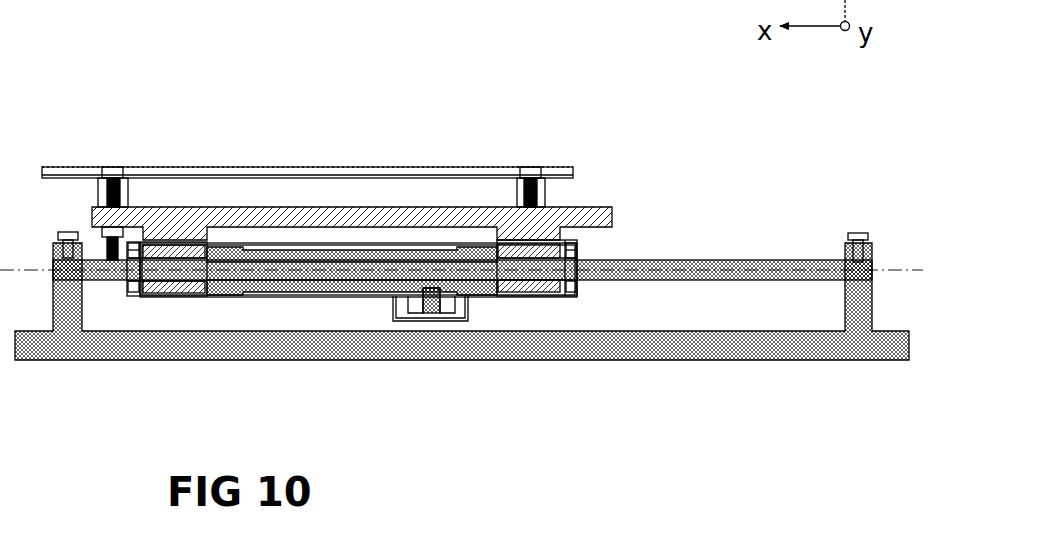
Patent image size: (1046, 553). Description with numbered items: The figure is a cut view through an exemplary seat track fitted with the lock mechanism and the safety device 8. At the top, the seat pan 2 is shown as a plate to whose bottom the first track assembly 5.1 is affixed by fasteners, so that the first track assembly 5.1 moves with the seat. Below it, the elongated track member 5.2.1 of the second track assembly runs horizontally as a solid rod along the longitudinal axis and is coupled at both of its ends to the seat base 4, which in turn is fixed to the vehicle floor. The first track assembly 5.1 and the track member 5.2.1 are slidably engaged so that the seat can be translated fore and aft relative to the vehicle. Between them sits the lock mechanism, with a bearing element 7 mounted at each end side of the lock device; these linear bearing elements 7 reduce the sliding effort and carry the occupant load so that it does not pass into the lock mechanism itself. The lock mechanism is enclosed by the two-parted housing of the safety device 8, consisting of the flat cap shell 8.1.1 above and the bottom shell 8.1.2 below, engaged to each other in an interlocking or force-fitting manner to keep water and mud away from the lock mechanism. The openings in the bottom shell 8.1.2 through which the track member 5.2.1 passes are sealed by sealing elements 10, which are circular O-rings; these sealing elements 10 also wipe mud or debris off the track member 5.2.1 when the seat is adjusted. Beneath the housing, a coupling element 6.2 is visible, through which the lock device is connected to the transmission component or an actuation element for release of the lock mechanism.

The seat pan 2 is at (413, 167).
The seat base 4 is at (728, 346).
The first track assembly 5.1 is at (513, 222).
The track member 5.2.1 is at (753, 264).
The coupling element 6.2 is at (446, 308).
The bearing element 7 is at (550, 243).
The safety device 8 is at (278, 305).
The cap shell 8.1.1 is at (165, 240).
The bottom shell 8.1.2 is at (357, 297).
The sealing element 10 is at (132, 292).